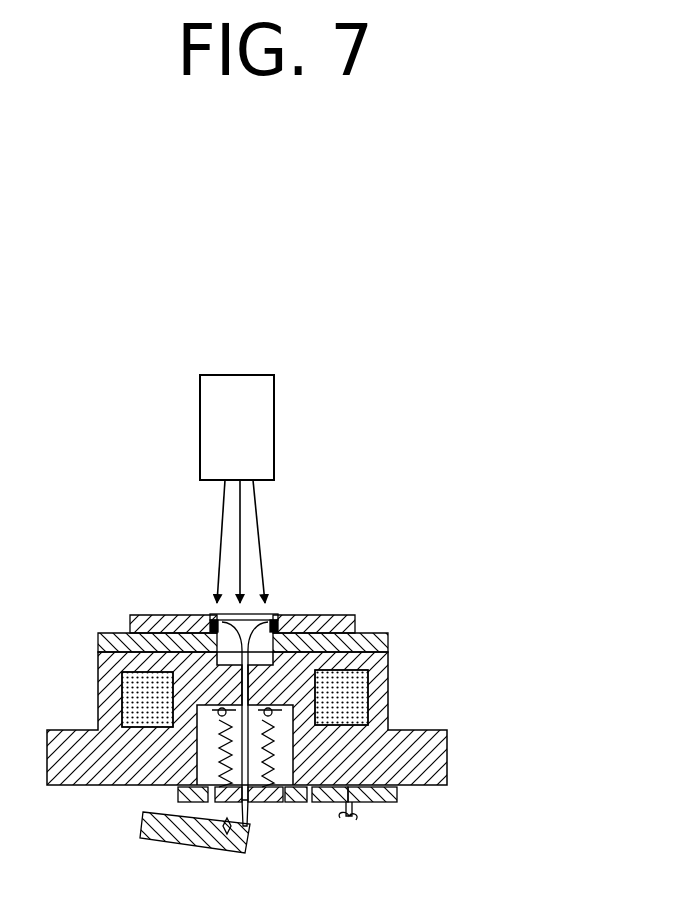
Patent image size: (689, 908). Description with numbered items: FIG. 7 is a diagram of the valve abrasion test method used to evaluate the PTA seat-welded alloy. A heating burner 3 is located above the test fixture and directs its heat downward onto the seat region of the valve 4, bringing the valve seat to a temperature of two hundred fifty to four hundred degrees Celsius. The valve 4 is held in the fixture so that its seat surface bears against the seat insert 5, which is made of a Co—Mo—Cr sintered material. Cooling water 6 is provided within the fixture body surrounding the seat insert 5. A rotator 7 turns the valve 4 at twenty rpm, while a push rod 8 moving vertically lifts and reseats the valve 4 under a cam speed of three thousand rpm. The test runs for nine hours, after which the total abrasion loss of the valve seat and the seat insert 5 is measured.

The heating burner 3 is at (263, 447).
The valve 4 is at (250, 617).
The seat insert 5 is at (287, 617).
The cooling water 6 is at (387, 668).
The rotator 7 is at (385, 802).
The push rod 8 is at (250, 823).